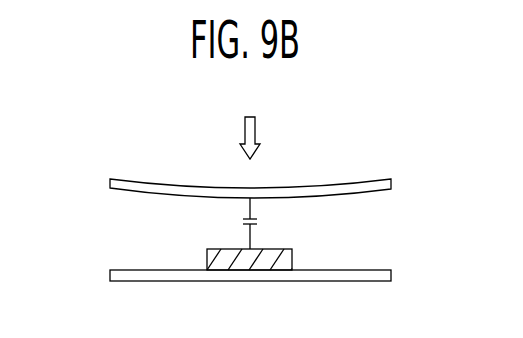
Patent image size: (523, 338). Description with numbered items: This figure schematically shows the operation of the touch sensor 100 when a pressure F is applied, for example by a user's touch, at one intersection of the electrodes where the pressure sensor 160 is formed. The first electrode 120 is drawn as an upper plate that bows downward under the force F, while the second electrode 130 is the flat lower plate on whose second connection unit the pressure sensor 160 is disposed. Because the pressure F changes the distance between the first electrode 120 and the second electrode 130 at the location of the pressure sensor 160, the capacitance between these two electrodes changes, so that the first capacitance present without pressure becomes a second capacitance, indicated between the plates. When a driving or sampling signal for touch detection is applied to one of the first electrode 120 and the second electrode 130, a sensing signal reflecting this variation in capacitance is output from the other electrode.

The touch sensor 100 is at (390, 144).
The first electrode 120 is at (110, 182).
The second electrode 130 is at (110, 276).
The pressure sensor 160 is at (292, 250).